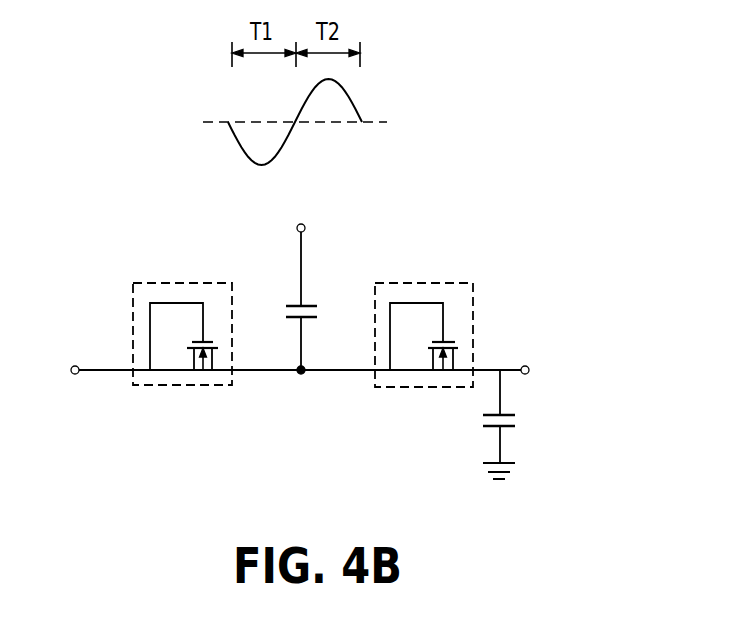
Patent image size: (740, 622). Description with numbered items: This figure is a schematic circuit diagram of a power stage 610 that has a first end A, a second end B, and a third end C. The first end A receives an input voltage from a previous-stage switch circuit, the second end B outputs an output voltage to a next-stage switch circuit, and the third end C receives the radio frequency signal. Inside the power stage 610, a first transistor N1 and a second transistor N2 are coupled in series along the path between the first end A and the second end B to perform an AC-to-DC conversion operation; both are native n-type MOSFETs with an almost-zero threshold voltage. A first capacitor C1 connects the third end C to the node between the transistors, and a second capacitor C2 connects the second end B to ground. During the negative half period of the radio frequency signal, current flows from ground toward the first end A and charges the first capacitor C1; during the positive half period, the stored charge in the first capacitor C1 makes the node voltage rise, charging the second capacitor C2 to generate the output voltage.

The power stage 610 is at (340, 358).
The first transistor N1 is at (445, 282).
The second transistor N2 is at (205, 281).
The first capacitor C1 is at (306, 277).
The second capacitor C2 is at (514, 446).